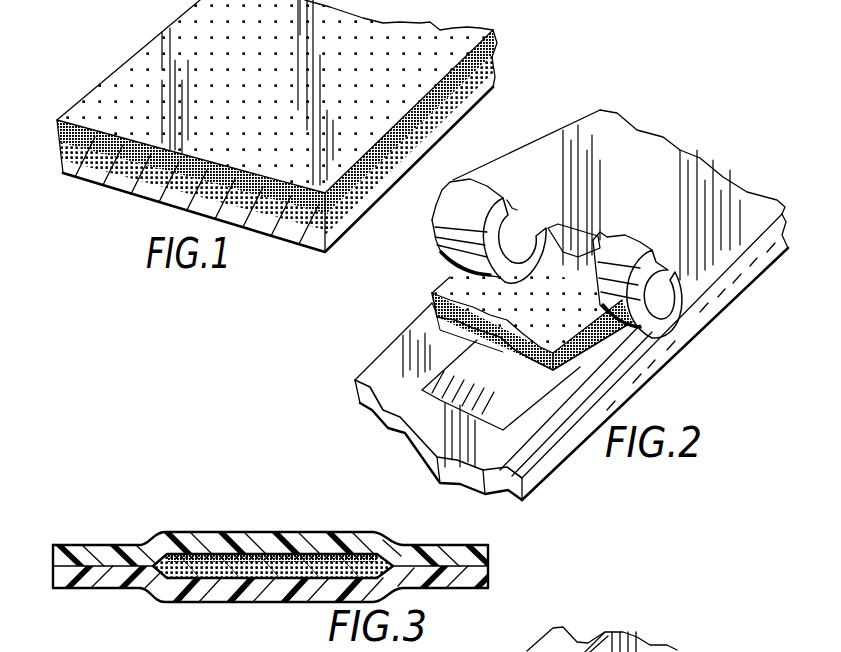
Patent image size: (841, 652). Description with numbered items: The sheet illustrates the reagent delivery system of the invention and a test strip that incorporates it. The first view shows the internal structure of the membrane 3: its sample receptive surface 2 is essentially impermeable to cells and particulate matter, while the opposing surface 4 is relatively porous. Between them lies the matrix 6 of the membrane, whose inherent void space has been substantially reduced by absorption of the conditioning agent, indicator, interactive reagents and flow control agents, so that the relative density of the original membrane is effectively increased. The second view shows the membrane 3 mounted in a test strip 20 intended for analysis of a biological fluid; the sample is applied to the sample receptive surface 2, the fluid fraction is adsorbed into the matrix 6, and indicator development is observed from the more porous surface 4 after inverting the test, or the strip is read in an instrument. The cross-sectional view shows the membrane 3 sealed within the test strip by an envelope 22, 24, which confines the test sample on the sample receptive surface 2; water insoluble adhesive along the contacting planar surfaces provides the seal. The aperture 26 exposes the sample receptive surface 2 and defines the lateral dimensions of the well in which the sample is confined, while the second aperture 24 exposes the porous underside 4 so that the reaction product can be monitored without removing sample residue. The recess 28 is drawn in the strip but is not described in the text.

In FIG. 1, the sample receptive surface 2 is at (360, 78).
In FIG. 2, the sample receptive surface 2 is at (496, 311).
In FIG. 3, the sample receptive surface 2 is at (273, 566).
In FIG. 1, the membrane 3 is at (50, 117).
In FIG. 2, the membrane 3 is at (430, 300).
In FIG. 1, the opposing surface 4 is at (266, 244).
In FIG. 2, the opposing surface 4 is at (506, 352).
In FIG. 2, the matrix 6 is at (430, 327).
In FIG. 2, the test strip 20 is at (657, 393).
In FIG. 2, the envelope 22 is at (553, 478).
In FIG. 3, the envelope 22 is at (103, 588).
In FIG. 2, the second aperture 24 is at (452, 218).
In FIG. 3, the second aperture 24 is at (103, 545).
In FIG. 2, the aperture 26 is at (568, 240).
In FIG. 2, the recess 28 is at (462, 398).